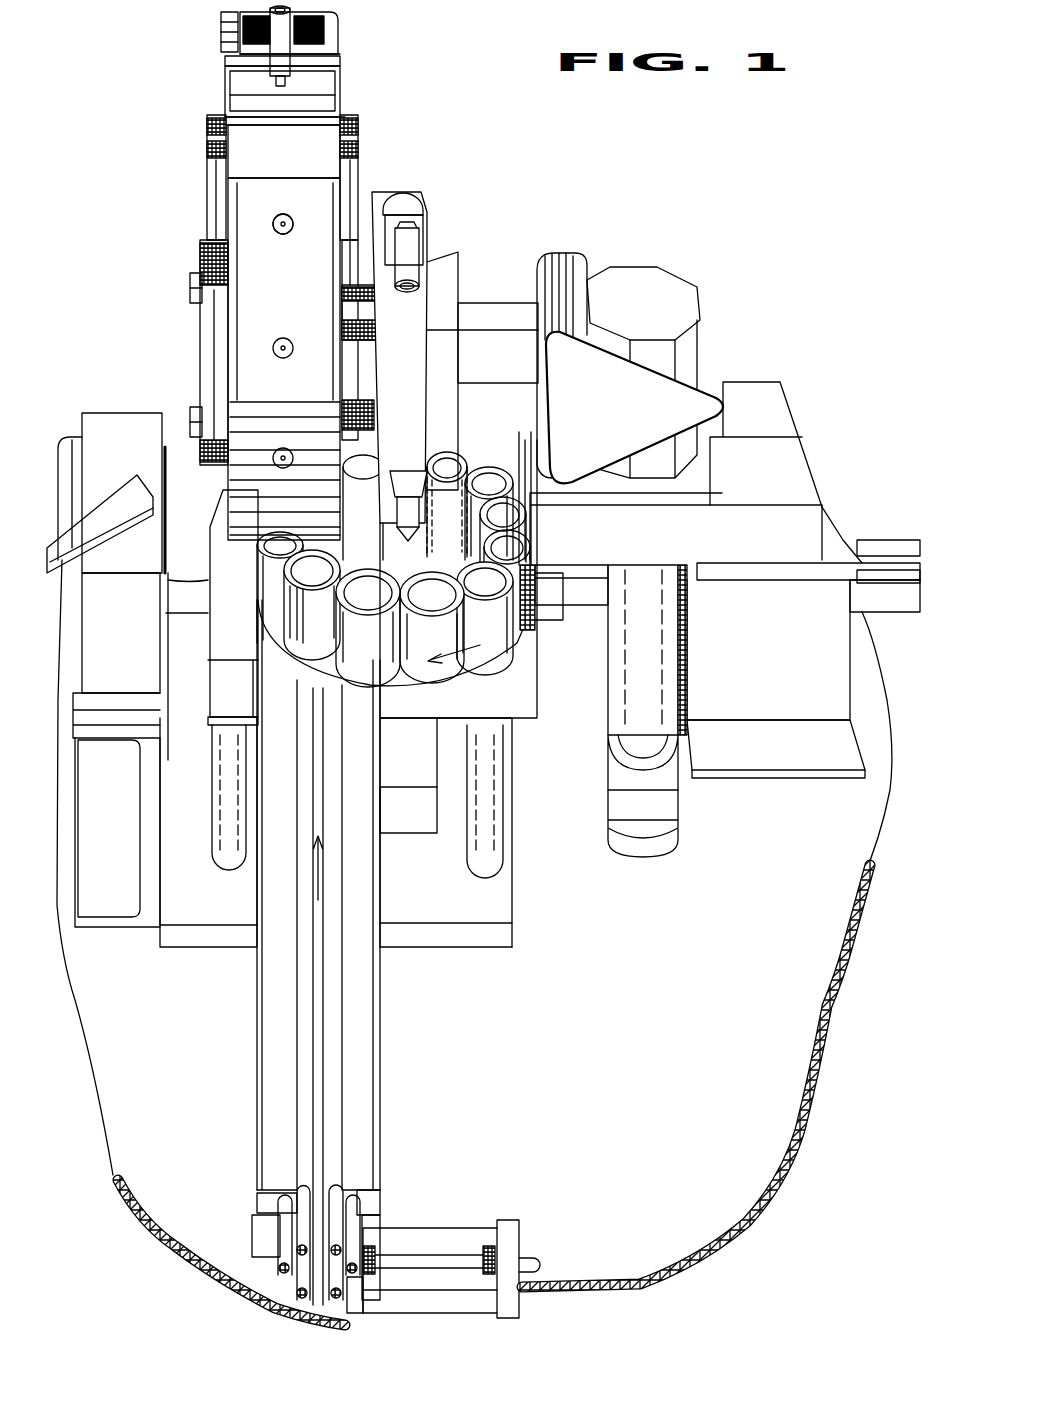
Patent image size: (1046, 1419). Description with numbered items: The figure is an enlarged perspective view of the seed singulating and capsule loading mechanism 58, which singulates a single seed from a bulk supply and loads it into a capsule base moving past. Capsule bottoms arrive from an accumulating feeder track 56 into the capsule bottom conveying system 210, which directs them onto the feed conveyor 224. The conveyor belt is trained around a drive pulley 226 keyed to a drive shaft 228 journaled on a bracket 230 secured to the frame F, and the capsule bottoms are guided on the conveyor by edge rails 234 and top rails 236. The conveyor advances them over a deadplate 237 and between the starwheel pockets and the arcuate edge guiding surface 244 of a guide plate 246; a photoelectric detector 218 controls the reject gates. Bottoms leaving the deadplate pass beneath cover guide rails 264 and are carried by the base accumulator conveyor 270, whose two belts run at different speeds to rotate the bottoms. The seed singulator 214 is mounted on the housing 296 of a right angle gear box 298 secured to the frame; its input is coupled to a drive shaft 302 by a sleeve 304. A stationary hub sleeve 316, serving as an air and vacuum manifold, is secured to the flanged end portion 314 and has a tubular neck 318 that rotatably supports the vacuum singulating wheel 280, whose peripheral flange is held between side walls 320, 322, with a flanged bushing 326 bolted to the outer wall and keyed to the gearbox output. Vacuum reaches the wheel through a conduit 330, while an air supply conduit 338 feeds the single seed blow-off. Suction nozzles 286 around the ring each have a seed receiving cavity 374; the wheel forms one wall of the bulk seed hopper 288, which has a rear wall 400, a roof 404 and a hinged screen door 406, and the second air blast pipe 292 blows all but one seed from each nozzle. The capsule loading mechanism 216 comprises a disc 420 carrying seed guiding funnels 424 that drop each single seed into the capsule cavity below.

The seed singulating and capsule loading mechanism 58 is at (219, 298).
The hinged screen door 406 is at (326, 35).
The second air blast pipe 292 is at (290, 82).
The bulk seed hopper 288 is at (348, 95).
The roof 404 is at (336, 118).
The rear wall 400 is at (336, 140).
The seed singulator 214 is at (216, 219).
The outer side wall 322 is at (204, 312).
The flanged bushing 326 is at (204, 338).
The side wall 320 is at (346, 352).
The tubular neck 318 is at (346, 314).
The vacuum singulating wheel 280 is at (302, 291).
The suction nozzles 286 is at (283, 214).
The seed receiving cavity 374 is at (294, 226).
The stationary hub sleeve 316 is at (380, 196).
The vacuum conduit 330 is at (412, 240).
The flanged end portion 314 is at (440, 258).
The housing 296 is at (493, 301).
The right angle gear box 298 is at (658, 310).
The cover guide rails 264 is at (874, 545).
The base accumulator conveyor 270 is at (853, 597).
The sleeve 304 is at (680, 640).
The drive shaft 302 is at (665, 748).
The capsule loading mechanism 216 is at (396, 582).
The disc 420 is at (400, 688).
The air supply conduit 338 is at (405, 525).
The seed guiding funnels 424 is at (512, 532).
The arcuate edge guiding surface 244 is at (266, 660).
The deadplate 237 is at (512, 700).
The photoelectric detector 218 is at (90, 410).
The guide plate 246 is at (215, 635).
The capsule bottom conveying system 210 is at (322, 952).
The edge rails 234 is at (256, 1052).
The top rails 236 is at (264, 1030).
The feed conveyor 224 is at (325, 977).
The accumulating feeder track 56 is at (276, 1232).
The drive pulley 226 is at (305, 1260).
The bracket 230 is at (372, 1243).
The drive shaft 228 is at (530, 1258).
The frame F is at (822, 1090).